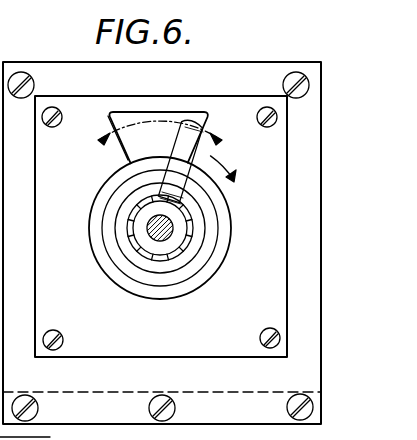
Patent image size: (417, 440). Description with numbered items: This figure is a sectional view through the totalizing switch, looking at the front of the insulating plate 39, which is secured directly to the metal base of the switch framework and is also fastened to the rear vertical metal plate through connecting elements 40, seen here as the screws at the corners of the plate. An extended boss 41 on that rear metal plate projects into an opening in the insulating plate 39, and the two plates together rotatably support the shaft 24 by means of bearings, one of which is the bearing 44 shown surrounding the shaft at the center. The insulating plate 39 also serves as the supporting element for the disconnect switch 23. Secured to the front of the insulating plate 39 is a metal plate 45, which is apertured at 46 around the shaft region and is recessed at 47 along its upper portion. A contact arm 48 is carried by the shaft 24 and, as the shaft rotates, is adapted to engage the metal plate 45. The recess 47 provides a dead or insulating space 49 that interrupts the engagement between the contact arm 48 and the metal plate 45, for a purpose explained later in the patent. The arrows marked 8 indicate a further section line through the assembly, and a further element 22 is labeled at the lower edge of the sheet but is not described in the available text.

The insulating plate 39 is at (229, 77).
The connecting elements 40 is at (20, 77).
The disconnect switch 23 is at (163, 325).
The insulating space 49 is at (165, 122).
The recess 47 is at (128, 117).
The extended boss 41 is at (108, 240).
The aperture 46 is at (220, 268).
The bearing 44 is at (165, 258).
The shaft 24 is at (155, 237).
The contact arm 48 is at (176, 151).
The section line 8- 8 is at (166, 151).
The metal plate 45 is at (276, 201).
The base 22 is at (133, 424).